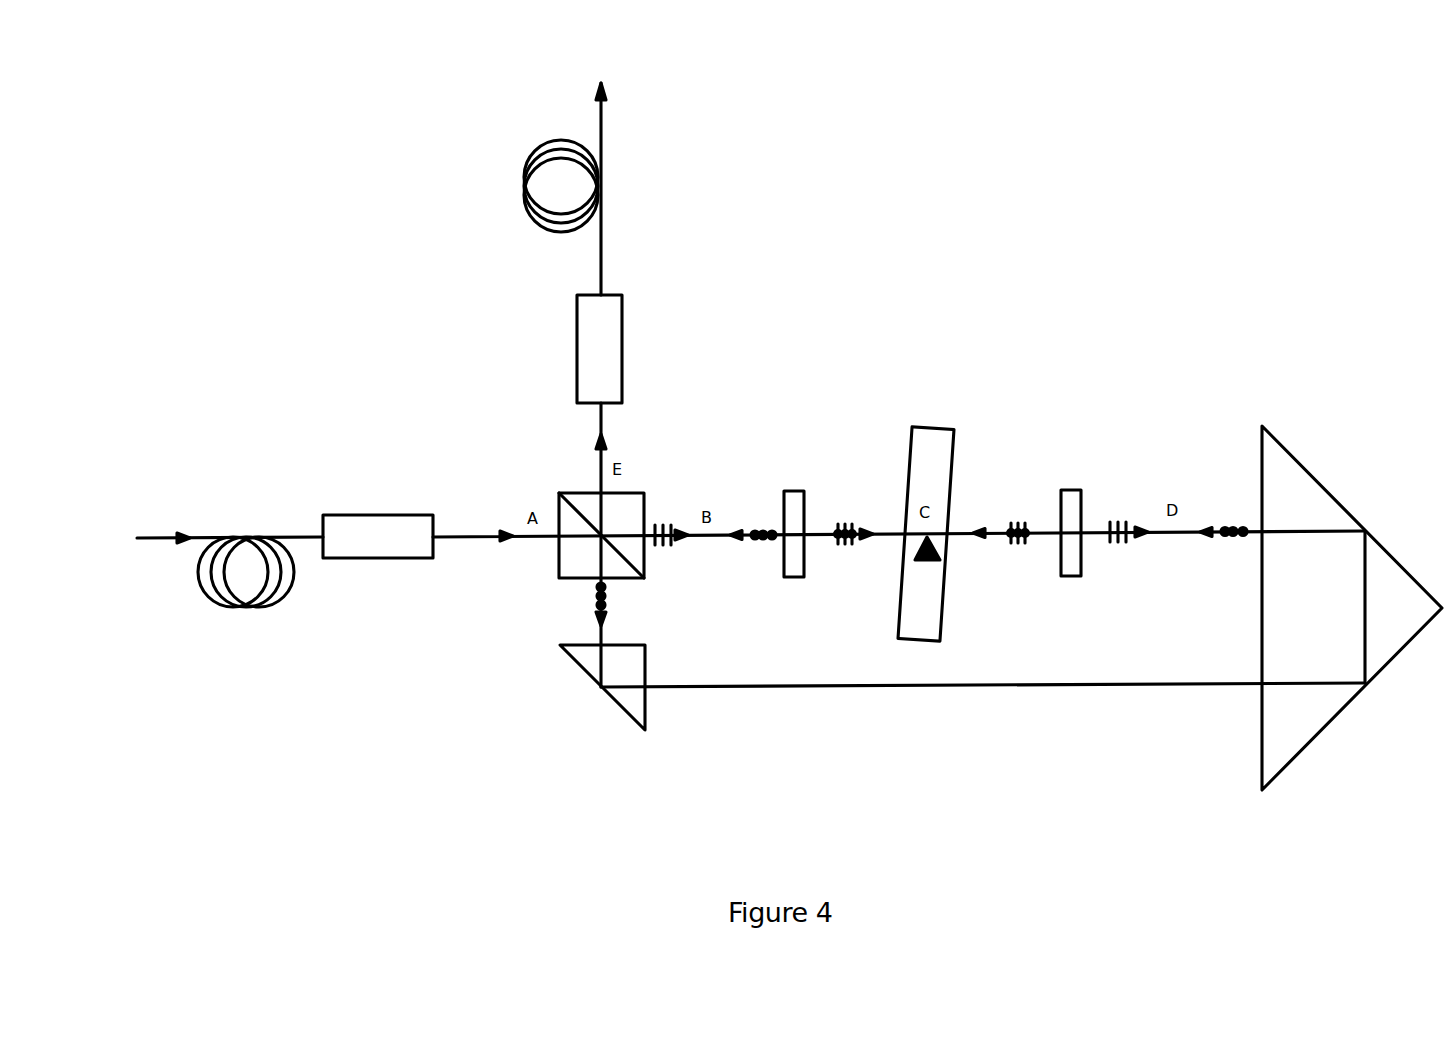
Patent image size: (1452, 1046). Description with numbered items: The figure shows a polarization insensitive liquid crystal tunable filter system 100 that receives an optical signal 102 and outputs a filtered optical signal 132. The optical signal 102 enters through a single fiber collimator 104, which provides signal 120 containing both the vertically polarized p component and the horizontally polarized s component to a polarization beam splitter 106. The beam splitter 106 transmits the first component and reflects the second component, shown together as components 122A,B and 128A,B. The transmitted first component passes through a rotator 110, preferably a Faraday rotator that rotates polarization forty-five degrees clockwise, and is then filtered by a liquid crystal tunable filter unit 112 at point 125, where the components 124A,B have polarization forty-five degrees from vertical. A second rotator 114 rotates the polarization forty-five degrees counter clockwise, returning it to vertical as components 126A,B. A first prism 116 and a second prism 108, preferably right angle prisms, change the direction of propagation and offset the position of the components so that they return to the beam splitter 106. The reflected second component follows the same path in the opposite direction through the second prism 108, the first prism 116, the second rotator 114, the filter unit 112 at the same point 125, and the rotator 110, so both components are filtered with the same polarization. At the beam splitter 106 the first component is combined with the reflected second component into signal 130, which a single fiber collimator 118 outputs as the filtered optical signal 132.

The polarization insensitive liquid crystal tunable filter system 100 is at (800, 85).
The optical signal 102 is at (247, 537).
The single fiber collimator 104 is at (357, 515).
The polarization beam splitter 106 is at (578, 492).
The second prism 108 is at (587, 673).
The rotator 110 is at (795, 488).
The liquid crystal tunable filter unit 112 is at (933, 425).
The second rotator 114 is at (1074, 485).
The first prism 116 is at (1270, 435).
The single fiber collimator 118 is at (623, 318).
The signal 120 is at (470, 537).
The first and second components 122A,B is at (704, 535).
The first and second components 124A,B is at (973, 533).
The point 125 is at (930, 560).
The first and second components 126A,B is at (1180, 531).
The first and second components 128A,B is at (600, 628).
The signal 130 is at (602, 428).
The filtered optical signal 132 is at (600, 235).